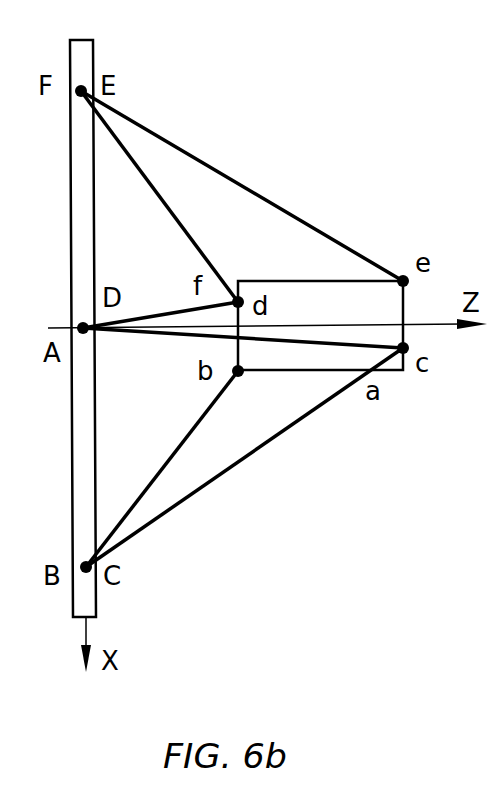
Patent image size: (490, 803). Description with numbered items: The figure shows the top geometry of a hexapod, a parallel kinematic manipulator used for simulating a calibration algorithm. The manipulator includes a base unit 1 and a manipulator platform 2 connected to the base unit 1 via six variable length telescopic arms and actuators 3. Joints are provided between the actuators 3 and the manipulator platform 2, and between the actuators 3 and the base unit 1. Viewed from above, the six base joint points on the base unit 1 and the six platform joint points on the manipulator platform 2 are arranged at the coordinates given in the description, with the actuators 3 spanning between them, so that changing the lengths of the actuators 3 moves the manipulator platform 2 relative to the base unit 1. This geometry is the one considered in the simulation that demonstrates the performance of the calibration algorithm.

The base unit 1 is at (80, 258).
The manipulator platform 2 is at (333, 310).
The variable length telescopic arms and actuators 3 is at (242, 182).